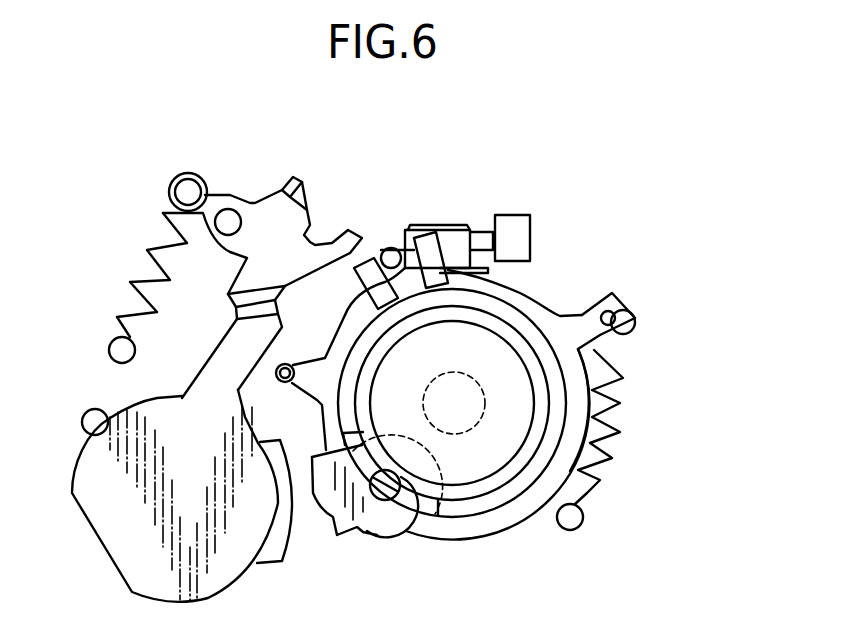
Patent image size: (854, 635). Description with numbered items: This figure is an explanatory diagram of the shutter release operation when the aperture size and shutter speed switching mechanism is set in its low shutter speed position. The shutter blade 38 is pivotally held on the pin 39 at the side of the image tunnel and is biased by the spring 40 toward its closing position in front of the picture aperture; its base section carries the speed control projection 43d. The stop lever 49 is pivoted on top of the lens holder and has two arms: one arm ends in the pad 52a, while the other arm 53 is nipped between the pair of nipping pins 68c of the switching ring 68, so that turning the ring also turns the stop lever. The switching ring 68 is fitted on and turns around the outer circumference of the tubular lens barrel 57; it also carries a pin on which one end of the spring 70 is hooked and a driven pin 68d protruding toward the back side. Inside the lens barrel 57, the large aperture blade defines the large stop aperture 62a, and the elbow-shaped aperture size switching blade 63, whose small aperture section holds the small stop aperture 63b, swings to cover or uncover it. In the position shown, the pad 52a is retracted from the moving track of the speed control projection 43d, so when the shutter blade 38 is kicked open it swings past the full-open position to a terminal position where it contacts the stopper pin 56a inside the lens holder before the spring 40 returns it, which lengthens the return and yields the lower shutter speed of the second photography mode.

The shutter blade 38 is at (220, 592).
The pin 39 is at (229, 209).
The spring 40 is at (150, 262).
The speed control projection 43d is at (355, 210).
The stop lever 49 is at (439, 226).
The pad 52a is at (514, 214).
The arm 53 is at (388, 247).
The stopper pin 56a is at (82, 420).
The lens barrel 57 is at (560, 431).
The large stop aperture 62a is at (473, 428).
The aperture size switching blade 63 is at (378, 537).
The small stop aperture 63b is at (400, 498).
The switching ring 68 is at (585, 405).
The nipping pins 68c is at (355, 281).
The driven pin 68d is at (637, 322).
The spring 70 is at (590, 488).